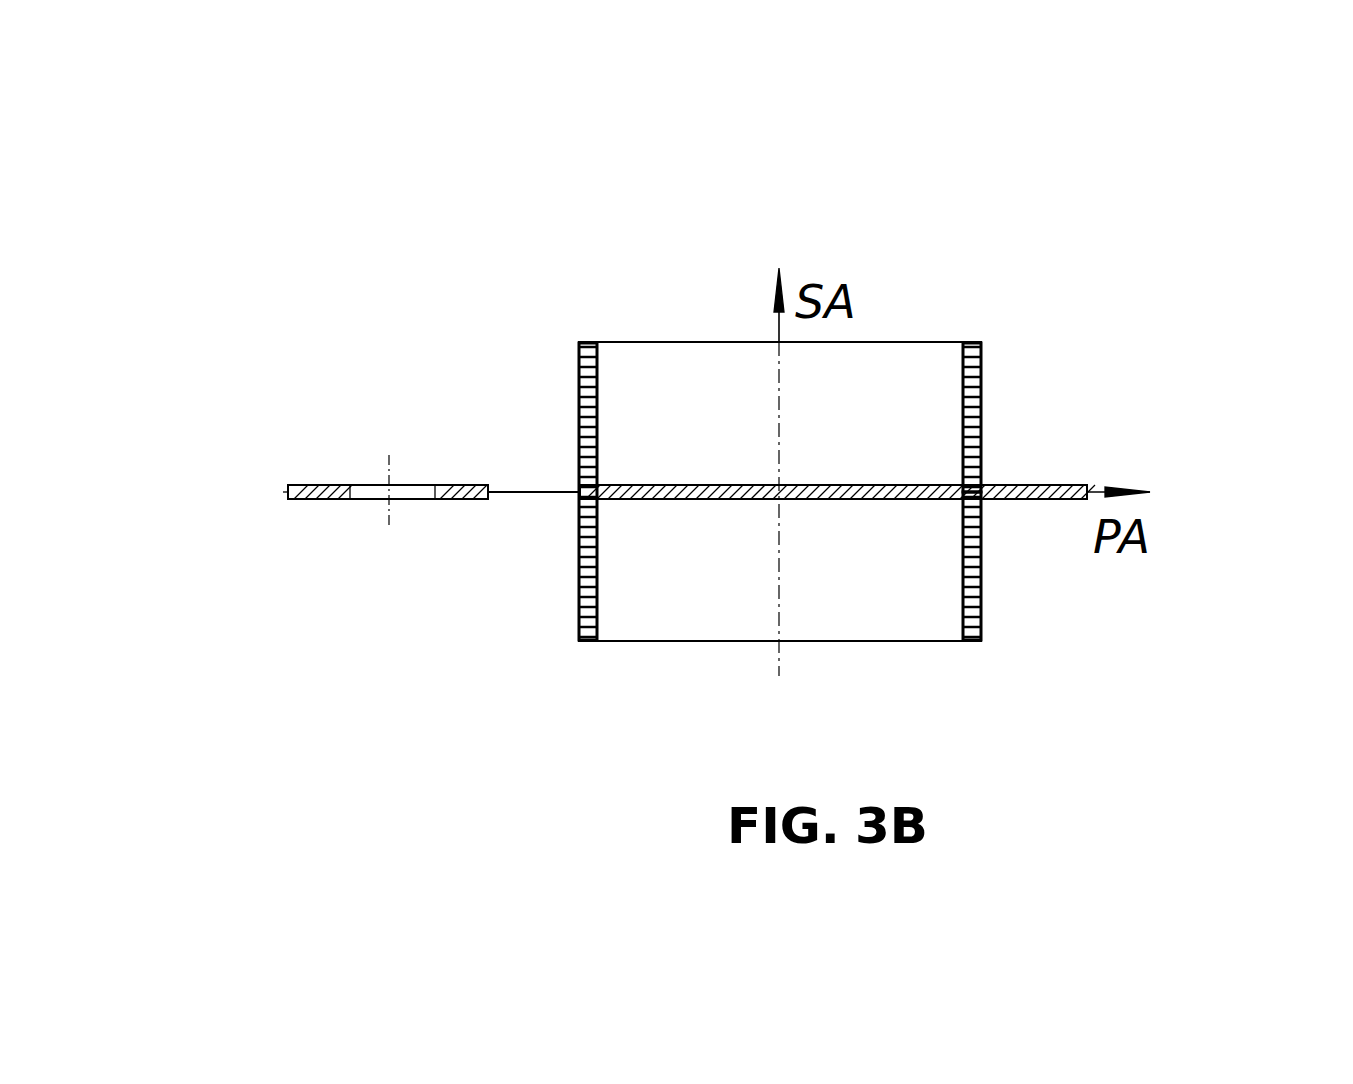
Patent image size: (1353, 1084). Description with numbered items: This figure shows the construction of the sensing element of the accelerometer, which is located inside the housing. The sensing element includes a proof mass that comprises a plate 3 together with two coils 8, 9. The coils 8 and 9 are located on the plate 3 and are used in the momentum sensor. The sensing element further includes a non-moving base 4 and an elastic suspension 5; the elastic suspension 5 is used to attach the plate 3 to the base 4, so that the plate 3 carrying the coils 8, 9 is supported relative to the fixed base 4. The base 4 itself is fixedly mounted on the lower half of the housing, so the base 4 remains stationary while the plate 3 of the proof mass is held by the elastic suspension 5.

The plate 3 is at (1080, 488).
The non-moving base 4 is at (310, 486).
The elastic suspension 5 is at (532, 492).
The coil 8 is at (972, 458).
The coil 9 is at (972, 543).